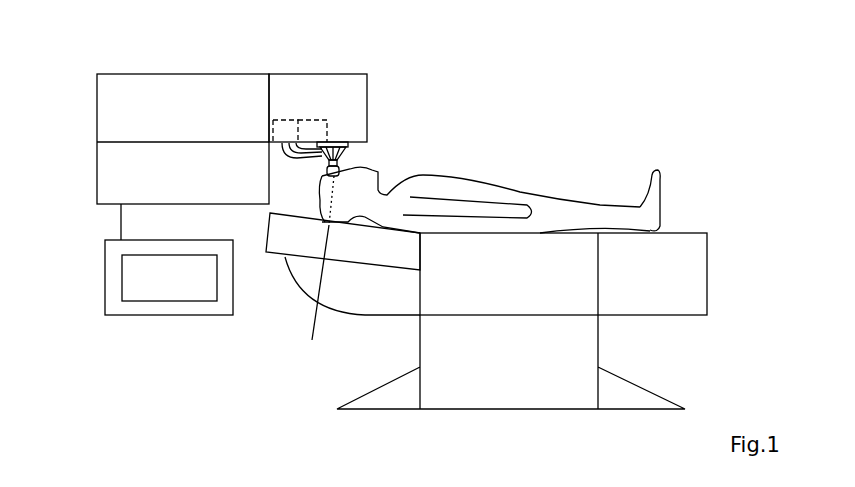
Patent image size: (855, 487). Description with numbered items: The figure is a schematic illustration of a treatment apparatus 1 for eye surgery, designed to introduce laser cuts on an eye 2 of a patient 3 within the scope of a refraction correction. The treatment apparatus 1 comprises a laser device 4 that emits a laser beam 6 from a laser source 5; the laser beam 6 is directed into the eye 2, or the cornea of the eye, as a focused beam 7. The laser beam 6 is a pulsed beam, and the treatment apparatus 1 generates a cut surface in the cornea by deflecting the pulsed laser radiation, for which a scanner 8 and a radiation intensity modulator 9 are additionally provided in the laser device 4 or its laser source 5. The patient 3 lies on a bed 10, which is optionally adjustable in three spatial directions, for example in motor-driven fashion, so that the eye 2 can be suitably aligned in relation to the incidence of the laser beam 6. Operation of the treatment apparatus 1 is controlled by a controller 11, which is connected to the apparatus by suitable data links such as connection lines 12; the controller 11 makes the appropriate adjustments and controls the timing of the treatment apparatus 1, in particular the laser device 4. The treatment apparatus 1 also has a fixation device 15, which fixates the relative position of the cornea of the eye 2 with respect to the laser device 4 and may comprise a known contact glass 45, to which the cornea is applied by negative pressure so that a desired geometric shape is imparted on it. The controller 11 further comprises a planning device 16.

The treatment apparatus 1 is at (598, 88).
The eye 2 is at (318, 273).
The patient 3 is at (655, 200).
The laser device 4 is at (122, 85).
The laser source 5 is at (310, 80).
The laser beam 6 is at (352, 143).
The focused beam 7 is at (347, 157).
The scanner 8 is at (326, 118).
The radiation intensity modulator 9 is at (287, 118).
The bed 10 is at (700, 255).
The controller 11 is at (146, 316).
The connection lines 12 is at (120, 221).
The fixation device 15 is at (303, 155).
The planning device 16 is at (130, 286).
The contact glass 45 is at (339, 170).